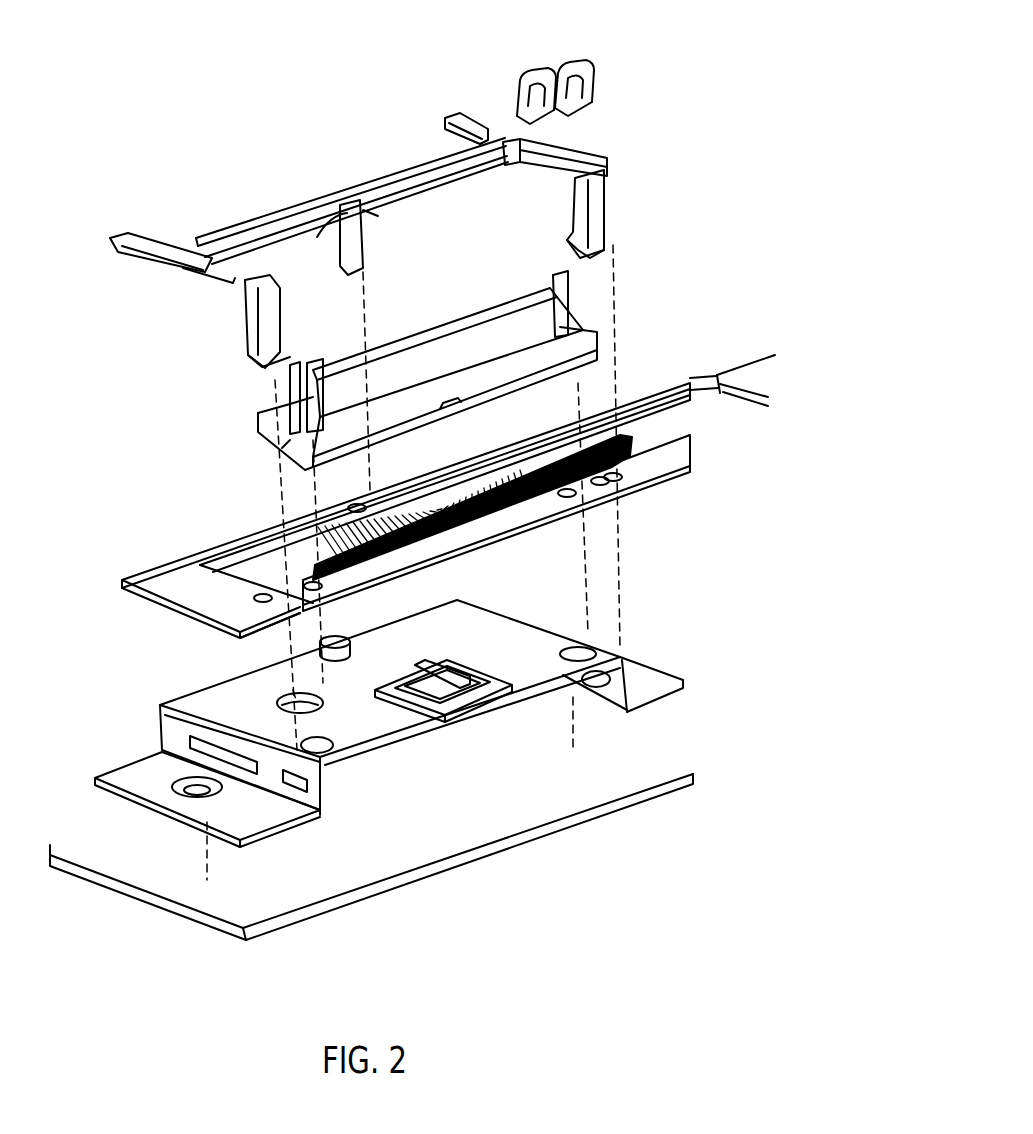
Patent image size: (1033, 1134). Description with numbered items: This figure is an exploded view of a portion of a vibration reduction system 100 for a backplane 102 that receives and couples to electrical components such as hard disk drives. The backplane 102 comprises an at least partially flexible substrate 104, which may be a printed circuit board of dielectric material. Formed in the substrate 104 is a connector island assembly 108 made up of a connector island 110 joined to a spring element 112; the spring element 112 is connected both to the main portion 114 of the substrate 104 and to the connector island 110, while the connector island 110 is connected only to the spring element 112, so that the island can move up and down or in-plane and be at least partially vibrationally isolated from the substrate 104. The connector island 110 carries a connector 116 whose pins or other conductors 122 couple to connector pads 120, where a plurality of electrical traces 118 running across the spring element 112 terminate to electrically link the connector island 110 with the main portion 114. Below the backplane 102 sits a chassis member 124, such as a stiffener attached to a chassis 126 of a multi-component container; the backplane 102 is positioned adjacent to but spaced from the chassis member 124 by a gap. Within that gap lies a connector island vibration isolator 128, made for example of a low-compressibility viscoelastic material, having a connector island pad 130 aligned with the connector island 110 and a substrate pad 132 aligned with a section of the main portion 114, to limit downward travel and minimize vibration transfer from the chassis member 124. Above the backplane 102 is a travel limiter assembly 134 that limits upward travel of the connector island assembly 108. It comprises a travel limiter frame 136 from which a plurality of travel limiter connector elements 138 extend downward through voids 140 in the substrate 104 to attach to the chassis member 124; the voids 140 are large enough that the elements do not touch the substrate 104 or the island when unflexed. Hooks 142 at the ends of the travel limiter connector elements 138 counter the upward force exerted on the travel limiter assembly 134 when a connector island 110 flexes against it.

The vibration reduction system 100 is at (230, 76).
The backplane 102 is at (192, 580).
The substrate 104 is at (273, 627).
The connector island assembly 108 is at (717, 348).
The connector island 110 is at (660, 475).
The spring element 112 is at (770, 377).
The main portion 114 is at (257, 530).
The connector 116 is at (568, 283).
The electrical traces 118 is at (620, 443).
The connector pads 120 is at (547, 513).
The pins or other conductors 122 is at (387, 332).
The chassis member 124 is at (680, 678).
The chassis 126 is at (483, 857).
The connector island vibration isolator 128 is at (491, 630).
The connector island pad 130 is at (397, 703).
The substrate pad 132 is at (347, 633).
The travel limiter assembly 134 is at (389, 146).
The travel limiter frame 136 is at (260, 218).
The travel limiter connector elements 138 is at (252, 312).
The voids 140 is at (250, 608).
The hooks 142 is at (285, 372).